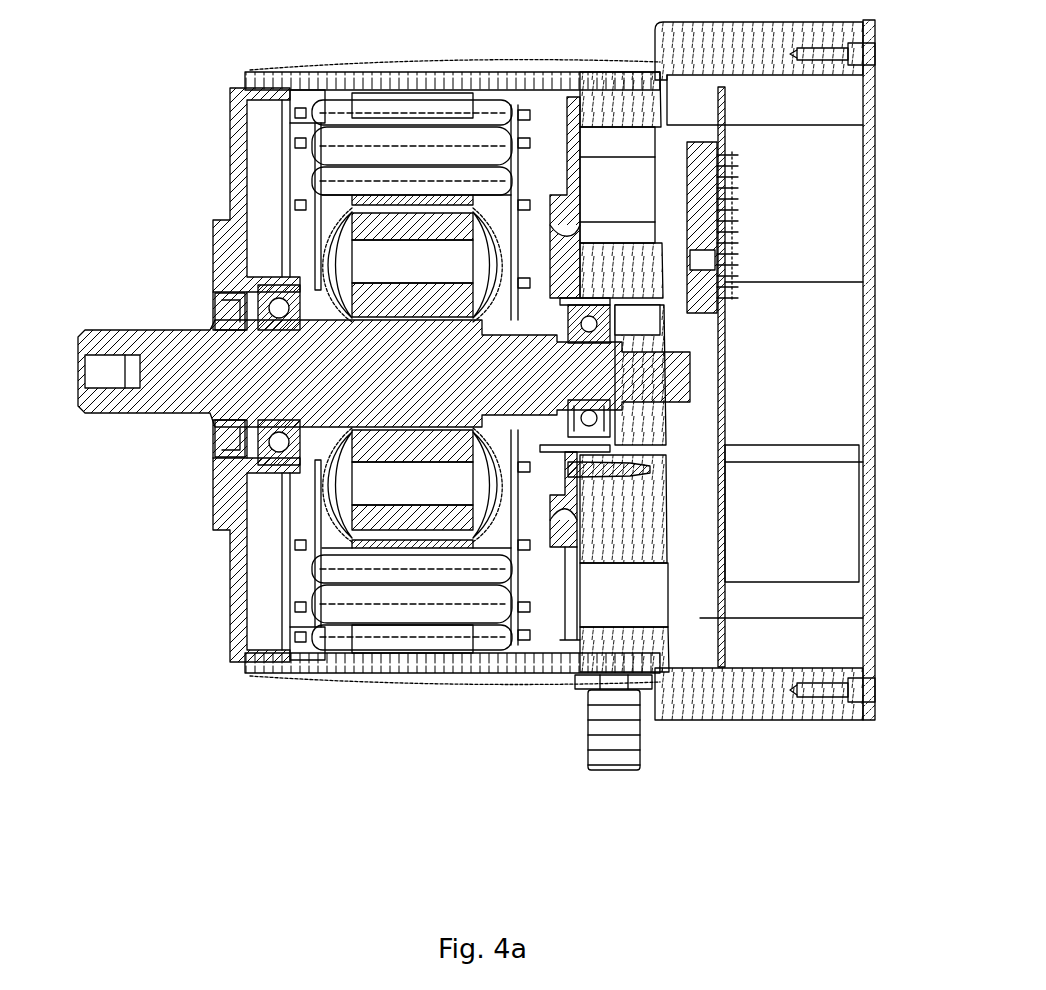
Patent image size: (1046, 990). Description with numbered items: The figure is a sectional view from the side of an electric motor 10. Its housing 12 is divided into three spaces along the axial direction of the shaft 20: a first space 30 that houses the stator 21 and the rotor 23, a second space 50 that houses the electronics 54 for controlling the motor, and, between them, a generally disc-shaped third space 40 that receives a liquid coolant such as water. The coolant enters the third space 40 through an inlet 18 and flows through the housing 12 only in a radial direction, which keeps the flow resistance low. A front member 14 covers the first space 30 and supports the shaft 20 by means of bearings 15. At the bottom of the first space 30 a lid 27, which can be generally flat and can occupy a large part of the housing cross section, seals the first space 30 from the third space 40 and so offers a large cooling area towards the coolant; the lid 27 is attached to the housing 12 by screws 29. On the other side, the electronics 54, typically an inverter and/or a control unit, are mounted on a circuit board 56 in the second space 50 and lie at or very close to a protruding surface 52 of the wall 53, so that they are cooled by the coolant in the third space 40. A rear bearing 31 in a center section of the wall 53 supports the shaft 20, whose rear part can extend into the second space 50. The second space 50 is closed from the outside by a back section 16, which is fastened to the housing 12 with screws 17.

The motor 10 is at (125, 92).
The housing 12 is at (465, 72).
The front member 14 is at (238, 178).
The bearings 15 is at (290, 437).
The back section 16 is at (870, 630).
The screws 17 is at (850, 693).
The inlet 18 is at (628, 757).
The shaft 20 is at (148, 355).
The stator 21 is at (383, 608).
The rotor 23 is at (390, 225).
The lid 27 is at (575, 165).
The screws 29 is at (593, 478).
The first space 30 is at (535, 632).
The rear bearing 31 is at (592, 418).
The third space 40 is at (622, 183).
The second space 50 is at (783, 365).
The protruding surface 52 is at (677, 283).
The wall 53 is at (647, 555).
The electronics 54 is at (700, 182).
The circuit board 56 is at (727, 527).